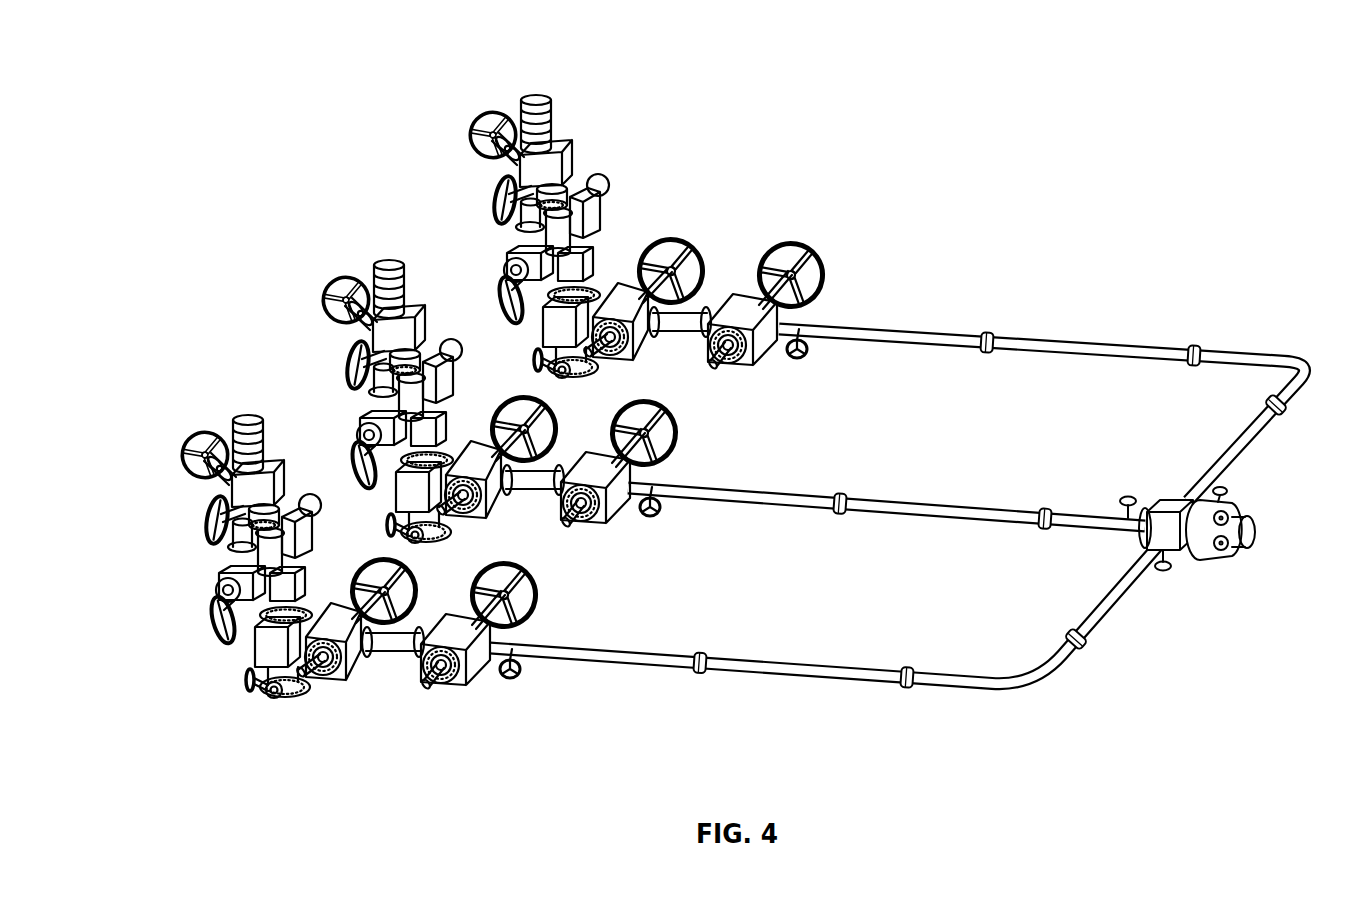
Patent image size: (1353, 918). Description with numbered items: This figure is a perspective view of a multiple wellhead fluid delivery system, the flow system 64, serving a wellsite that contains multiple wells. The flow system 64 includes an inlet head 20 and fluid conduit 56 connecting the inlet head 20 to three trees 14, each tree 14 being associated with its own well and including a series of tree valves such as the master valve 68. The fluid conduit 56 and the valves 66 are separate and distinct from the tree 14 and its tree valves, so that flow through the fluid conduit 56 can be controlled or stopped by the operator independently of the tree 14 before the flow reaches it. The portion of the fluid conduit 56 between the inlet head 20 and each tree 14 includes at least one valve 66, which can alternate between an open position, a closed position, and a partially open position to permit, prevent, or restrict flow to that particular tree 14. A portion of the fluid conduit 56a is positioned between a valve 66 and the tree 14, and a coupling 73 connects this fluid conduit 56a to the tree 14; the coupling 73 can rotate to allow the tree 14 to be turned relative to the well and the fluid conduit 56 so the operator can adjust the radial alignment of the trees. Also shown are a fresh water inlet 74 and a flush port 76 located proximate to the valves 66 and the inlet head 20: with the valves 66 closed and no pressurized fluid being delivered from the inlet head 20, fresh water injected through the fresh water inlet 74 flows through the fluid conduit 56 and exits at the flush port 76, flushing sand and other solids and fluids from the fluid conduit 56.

The tree 14 is at (530, 90).
The inlet head 20 is at (1210, 562).
The fluid conduit 56 is at (1022, 322).
The fluid conduit portion 56a is at (687, 333).
The flow system 64 is at (1108, 188).
The valve 66 is at (742, 295).
The master valve 68 is at (538, 358).
The coupling 73 is at (596, 284).
The fresh water inlet 74 is at (514, 680).
The flush port 76 is at (1226, 492).